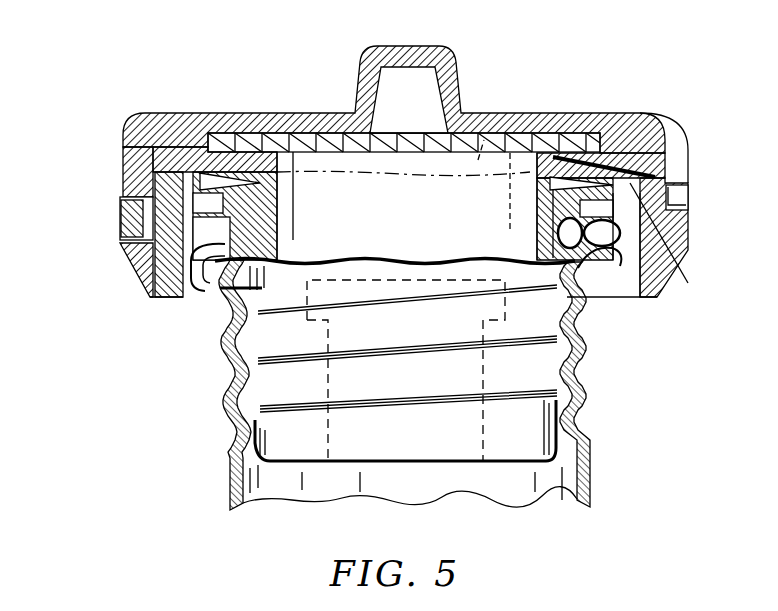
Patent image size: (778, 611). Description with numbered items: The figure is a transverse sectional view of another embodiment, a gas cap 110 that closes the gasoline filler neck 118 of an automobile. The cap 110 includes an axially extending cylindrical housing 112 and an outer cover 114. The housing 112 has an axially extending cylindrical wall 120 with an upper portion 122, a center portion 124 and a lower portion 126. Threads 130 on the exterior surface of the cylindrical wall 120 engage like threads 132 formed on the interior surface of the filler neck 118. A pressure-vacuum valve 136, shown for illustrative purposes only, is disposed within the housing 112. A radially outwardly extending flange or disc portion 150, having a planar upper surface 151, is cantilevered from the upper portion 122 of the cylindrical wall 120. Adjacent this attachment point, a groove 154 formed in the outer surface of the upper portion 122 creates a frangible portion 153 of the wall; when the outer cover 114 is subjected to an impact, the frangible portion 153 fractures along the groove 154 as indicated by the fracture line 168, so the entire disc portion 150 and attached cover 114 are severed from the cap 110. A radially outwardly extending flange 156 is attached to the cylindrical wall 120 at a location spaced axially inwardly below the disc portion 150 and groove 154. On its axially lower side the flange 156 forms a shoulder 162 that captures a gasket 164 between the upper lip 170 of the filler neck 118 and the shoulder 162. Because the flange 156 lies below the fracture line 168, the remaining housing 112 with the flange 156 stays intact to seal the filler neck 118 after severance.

The gas cap 110 is at (108, 108).
The cylindrical housing 112 is at (411, 379).
The outer cover 114 is at (545, 115).
The gasoline filler neck 118 is at (592, 487).
The cylindrical wall 120 is at (280, 240).
The upper portion 122 is at (293, 152).
The center portion 124 is at (226, 371).
The lower portion 126 is at (279, 458).
The threads 130 is at (582, 349).
The threads 132 is at (557, 385).
The pressure-vacuum valve 136 is at (425, 430).
The disc portion 150 is at (663, 145).
The planar upper surface 151 is at (612, 150).
The frangible portion 153 is at (522, 186).
The groove 154 is at (200, 177).
The flange 156 is at (672, 236).
The shoulder 162 is at (540, 262).
The gasket 164 is at (205, 243).
The fracture line 168 is at (478, 175).
The upper lip 170 is at (660, 262).